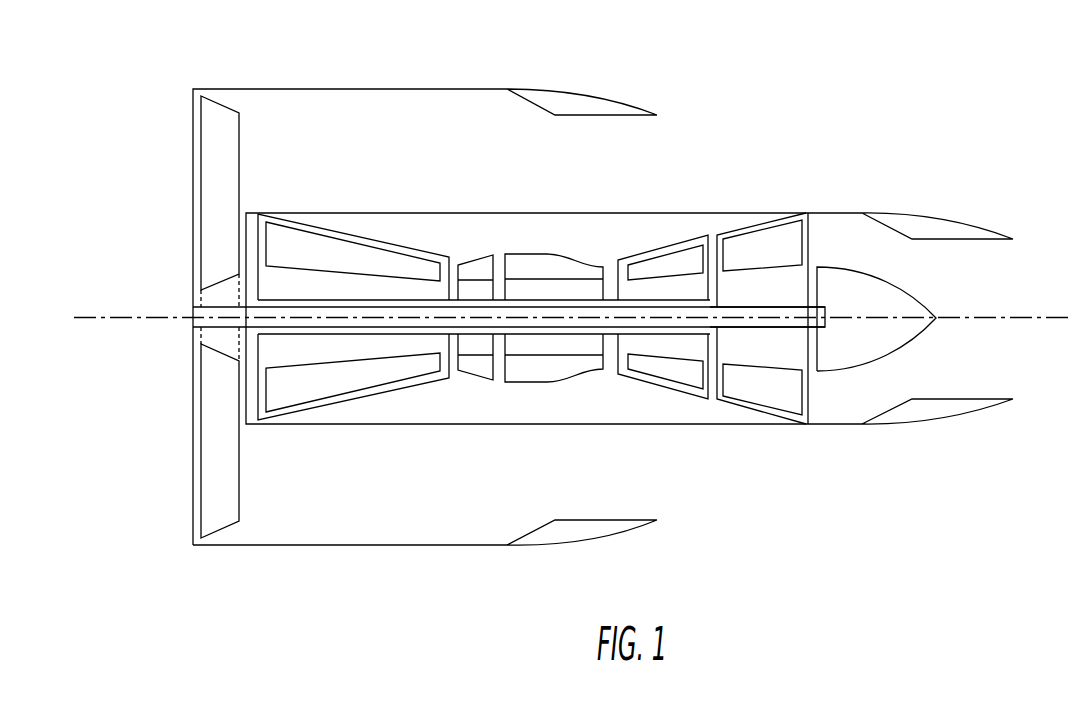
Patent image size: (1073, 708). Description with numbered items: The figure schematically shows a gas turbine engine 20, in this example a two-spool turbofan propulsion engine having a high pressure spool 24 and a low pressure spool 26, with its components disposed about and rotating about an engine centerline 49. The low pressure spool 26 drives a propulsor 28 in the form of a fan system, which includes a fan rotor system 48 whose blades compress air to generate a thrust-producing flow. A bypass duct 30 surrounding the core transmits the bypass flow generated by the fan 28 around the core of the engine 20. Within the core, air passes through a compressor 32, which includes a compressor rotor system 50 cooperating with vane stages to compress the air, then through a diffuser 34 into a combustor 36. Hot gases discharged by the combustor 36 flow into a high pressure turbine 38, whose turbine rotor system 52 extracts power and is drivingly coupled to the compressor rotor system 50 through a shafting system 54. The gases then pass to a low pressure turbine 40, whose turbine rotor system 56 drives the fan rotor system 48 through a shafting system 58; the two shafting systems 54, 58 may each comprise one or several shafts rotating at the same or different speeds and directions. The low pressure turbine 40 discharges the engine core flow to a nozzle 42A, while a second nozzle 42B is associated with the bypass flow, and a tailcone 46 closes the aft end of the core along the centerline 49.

The gas turbine engine 20 is at (850, 91).
The high pressure spool 24 is at (652, 168).
The low pressure spool 26 is at (767, 148).
The propulsor 28 is at (192, 418).
The bypass duct 30 is at (325, 527).
The compressor 32 is at (410, 390).
The diffuser 34 is at (477, 263).
The combustor 36 is at (547, 255).
The high pressure turbine 38 is at (662, 392).
The low pressure turbine 40 is at (753, 413).
The nozzle 42A is at (977, 413).
The nozzle 42B is at (598, 537).
The tailcone 46 is at (900, 288).
The fan rotor system 48 is at (223, 532).
The engine centerline 49 is at (992, 317).
The compressor rotor system 50 is at (387, 252).
The turbine rotor system 52 is at (683, 248).
The shafting system 54 is at (609, 337).
The turbine rotor system 56 is at (757, 233).
The shafting system 58 is at (732, 333).